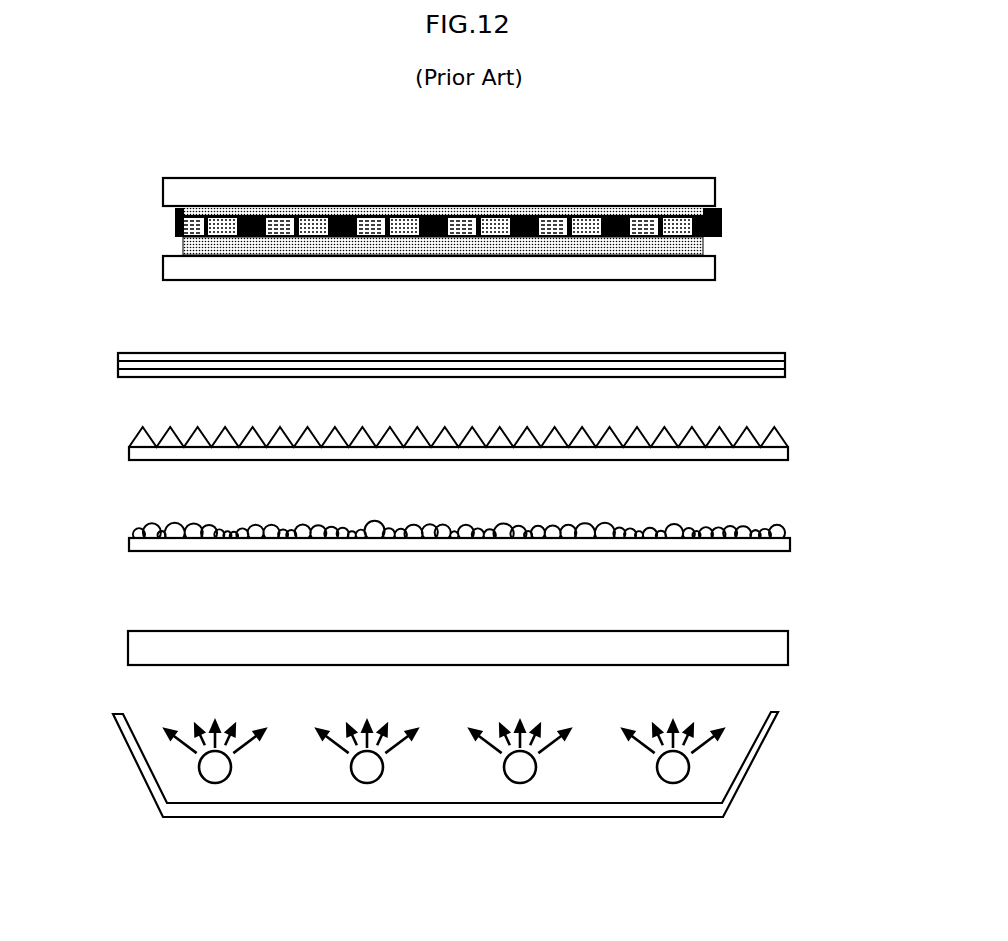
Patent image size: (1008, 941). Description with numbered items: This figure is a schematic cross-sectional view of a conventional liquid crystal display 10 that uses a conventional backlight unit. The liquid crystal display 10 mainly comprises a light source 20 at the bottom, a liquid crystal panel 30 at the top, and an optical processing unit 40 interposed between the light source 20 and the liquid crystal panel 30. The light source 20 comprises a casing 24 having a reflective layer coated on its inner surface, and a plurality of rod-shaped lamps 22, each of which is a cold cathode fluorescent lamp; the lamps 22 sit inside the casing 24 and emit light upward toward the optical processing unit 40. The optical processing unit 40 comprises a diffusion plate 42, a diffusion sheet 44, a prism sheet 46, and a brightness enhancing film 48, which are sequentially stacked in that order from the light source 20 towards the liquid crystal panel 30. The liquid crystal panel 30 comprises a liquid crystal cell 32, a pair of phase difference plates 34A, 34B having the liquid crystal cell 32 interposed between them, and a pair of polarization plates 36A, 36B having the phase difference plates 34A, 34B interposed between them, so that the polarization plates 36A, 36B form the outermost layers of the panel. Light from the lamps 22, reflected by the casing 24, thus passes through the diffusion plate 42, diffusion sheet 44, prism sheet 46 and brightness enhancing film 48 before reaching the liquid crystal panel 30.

The liquid crystal display 10 is at (466, 930).
The light source 20 is at (818, 712).
The rod-shaped lamp 22 is at (212, 775).
The casing 24 is at (317, 803).
The liquid crystal panel 30 is at (812, 197).
The liquid crystal cell 32 is at (177, 223).
The phase difference plate 34A is at (697, 209).
The phase difference plate 34B is at (703, 243).
The polarization plate 36A is at (652, 188).
The polarization plate 36B is at (652, 268).
The optical processing unit 40 is at (813, 353).
The diffusion plate 42 is at (128, 645).
The diffusion sheet 44 is at (128, 543).
The prism sheet 46 is at (128, 451).
The brightness enhancing film 48 is at (117, 363).